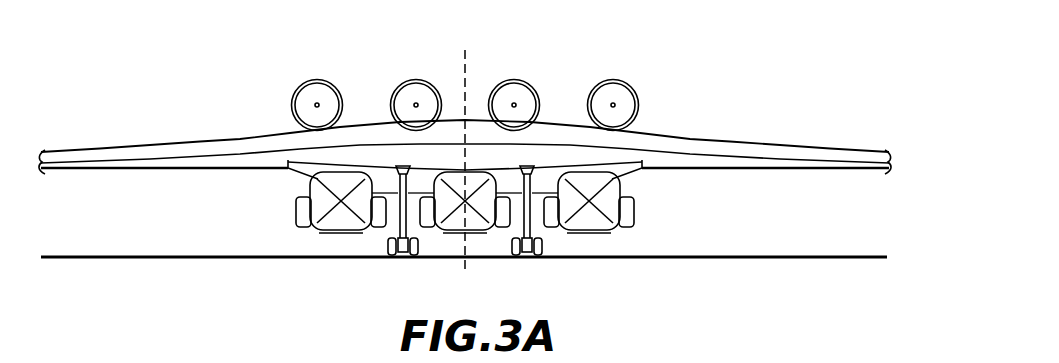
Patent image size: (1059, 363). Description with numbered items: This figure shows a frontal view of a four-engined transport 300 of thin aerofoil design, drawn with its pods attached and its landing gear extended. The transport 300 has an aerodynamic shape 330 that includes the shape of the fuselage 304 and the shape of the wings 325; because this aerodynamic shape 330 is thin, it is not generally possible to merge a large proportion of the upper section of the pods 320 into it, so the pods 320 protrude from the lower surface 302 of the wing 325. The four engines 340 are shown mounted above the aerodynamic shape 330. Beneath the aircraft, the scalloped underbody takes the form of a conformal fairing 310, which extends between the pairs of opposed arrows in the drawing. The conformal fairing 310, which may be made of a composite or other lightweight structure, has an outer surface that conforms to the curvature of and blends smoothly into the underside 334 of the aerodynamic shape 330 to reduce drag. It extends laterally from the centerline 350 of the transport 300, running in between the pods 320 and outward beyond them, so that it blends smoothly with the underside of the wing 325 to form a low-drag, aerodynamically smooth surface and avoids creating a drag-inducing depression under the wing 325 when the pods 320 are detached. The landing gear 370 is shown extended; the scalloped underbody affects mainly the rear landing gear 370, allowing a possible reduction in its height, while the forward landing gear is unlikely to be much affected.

The transport 300 is at (745, 66).
The lower surface of the wing 302 is at (190, 171).
The fuselage 304 is at (472, 138).
The conformal fairing 310 is at (309, 160).
The pods 320 is at (330, 232).
The wings 325 is at (157, 147).
The aerodynamic shape 330 is at (543, 133).
The underside of aerodynamic shape 334 is at (537, 205).
The engines 340 is at (304, 84).
The centerline 350 is at (462, 62).
The landing gear 370 is at (390, 226).